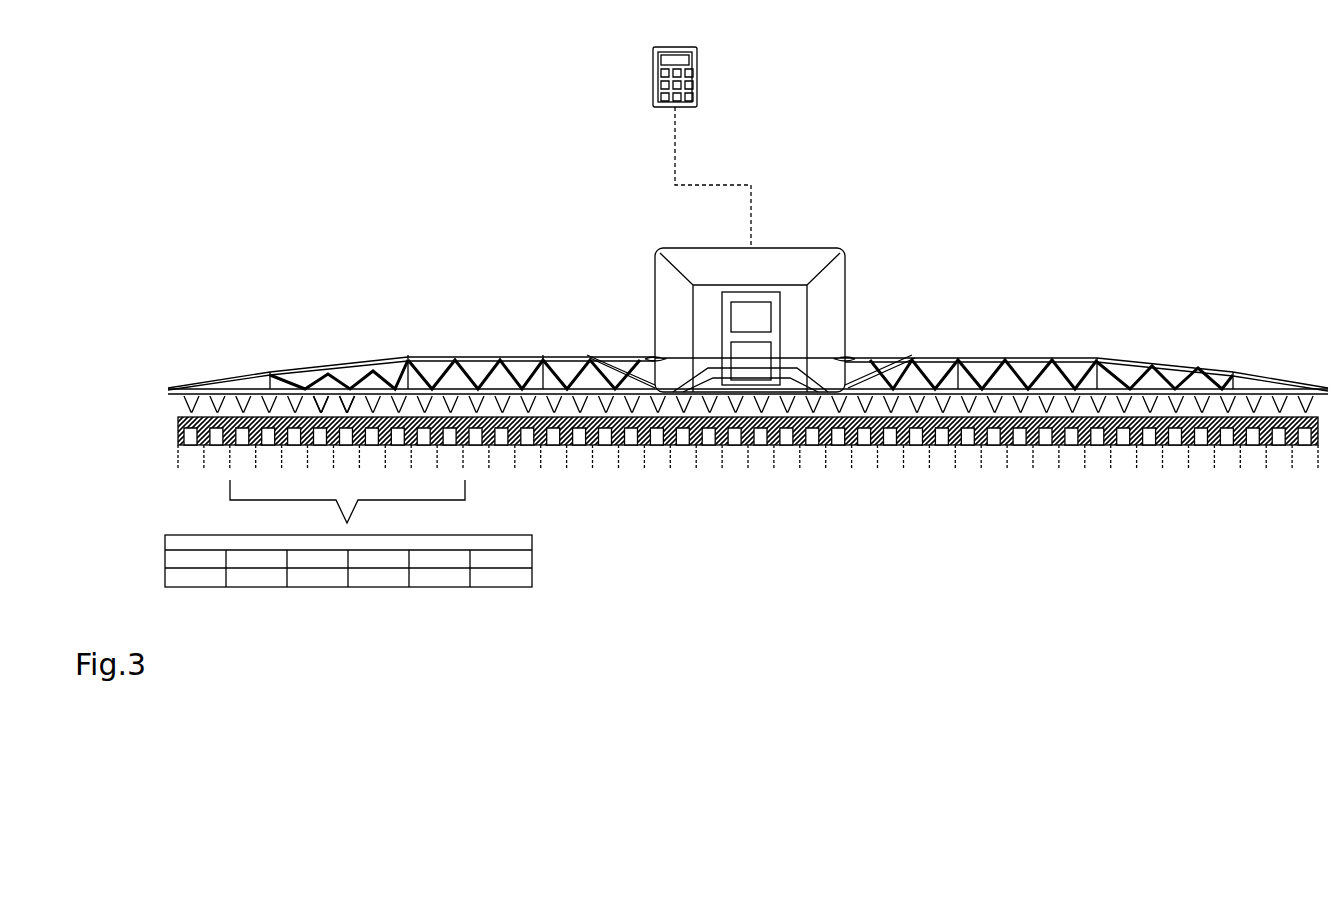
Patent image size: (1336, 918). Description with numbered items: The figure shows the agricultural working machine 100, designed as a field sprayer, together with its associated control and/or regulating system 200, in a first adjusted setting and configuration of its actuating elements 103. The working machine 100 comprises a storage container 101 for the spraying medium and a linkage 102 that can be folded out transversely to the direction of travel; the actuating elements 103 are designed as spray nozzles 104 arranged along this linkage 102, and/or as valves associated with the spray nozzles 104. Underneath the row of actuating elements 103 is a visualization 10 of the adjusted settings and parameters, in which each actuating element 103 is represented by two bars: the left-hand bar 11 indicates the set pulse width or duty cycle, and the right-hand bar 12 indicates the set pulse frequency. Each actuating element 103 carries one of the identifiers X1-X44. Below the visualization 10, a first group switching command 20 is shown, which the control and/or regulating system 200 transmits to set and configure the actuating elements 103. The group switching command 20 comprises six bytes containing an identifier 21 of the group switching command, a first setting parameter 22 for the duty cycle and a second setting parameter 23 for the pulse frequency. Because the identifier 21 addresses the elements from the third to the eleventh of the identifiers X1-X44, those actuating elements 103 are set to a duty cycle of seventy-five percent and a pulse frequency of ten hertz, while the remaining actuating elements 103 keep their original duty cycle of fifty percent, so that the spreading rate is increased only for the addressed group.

The agricultural working machine 100 is at (908, 165).
The control and/or regulating system 200 is at (698, 80).
The storage container 101 is at (830, 300).
The linkage 102 is at (1070, 357).
The actuating element 103 is at (172, 408).
The spray nozzle 104 is at (218, 392).
The left-hand bar 11 is at (320, 392).
The right-hand bar 12 is at (333, 392).
The visualization of adjusted settings and/or parameters 10 is at (172, 430).
The identifiers of the actuating elements X1-X44 is at (848, 532).
The group switching command 20 is at (553, 565).
The identifier of the group switching command 21 is at (531, 596).
The first setting parameter 22 is at (409, 596).
The second setting parameter 23 is at (287, 596).